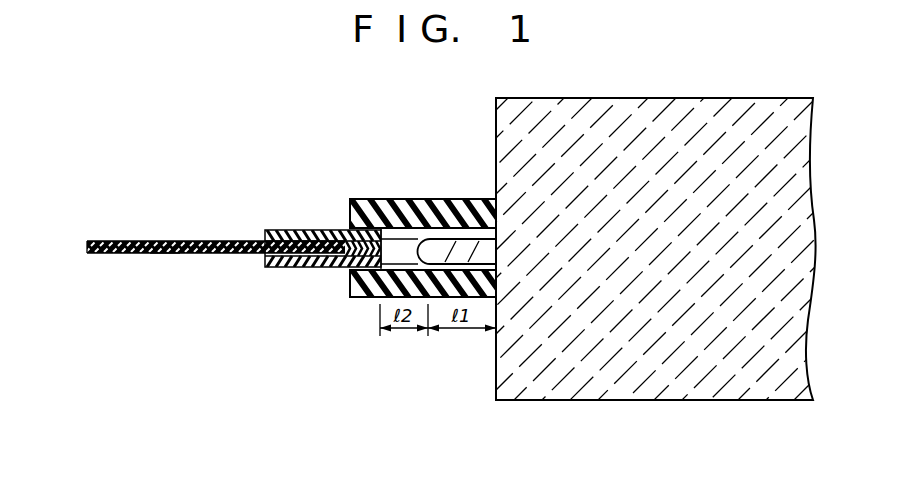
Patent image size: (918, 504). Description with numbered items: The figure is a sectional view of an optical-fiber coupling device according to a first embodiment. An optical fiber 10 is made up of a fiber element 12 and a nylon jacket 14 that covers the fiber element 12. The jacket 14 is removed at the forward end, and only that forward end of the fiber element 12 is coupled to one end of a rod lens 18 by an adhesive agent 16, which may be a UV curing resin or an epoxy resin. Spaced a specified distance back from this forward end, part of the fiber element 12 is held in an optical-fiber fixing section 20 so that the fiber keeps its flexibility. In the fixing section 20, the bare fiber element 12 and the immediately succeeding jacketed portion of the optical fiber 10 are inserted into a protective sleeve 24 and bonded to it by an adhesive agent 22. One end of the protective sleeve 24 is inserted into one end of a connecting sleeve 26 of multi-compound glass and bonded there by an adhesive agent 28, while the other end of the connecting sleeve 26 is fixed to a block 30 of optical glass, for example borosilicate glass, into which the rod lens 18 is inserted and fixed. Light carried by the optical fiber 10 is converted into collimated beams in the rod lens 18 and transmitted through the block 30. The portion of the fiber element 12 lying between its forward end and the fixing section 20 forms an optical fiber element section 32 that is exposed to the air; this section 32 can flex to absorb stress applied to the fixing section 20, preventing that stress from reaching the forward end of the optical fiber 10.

The optical fiber 10 is at (172, 241).
The fiber element 12 is at (218, 241).
The nylon jacket 14 is at (165, 254).
The adhesive agent 16 is at (418, 240).
The rod lens 18 is at (465, 239).
The optical-fiber fixing section 20 is at (385, 253).
The adhesive agent 22 is at (322, 238).
The protective sleeve 24 is at (283, 230).
The connecting sleeve 26 is at (352, 296).
The adhesive agent 28 is at (350, 271).
The block 30 is at (603, 400).
The optical fiber element section 32 is at (400, 245).